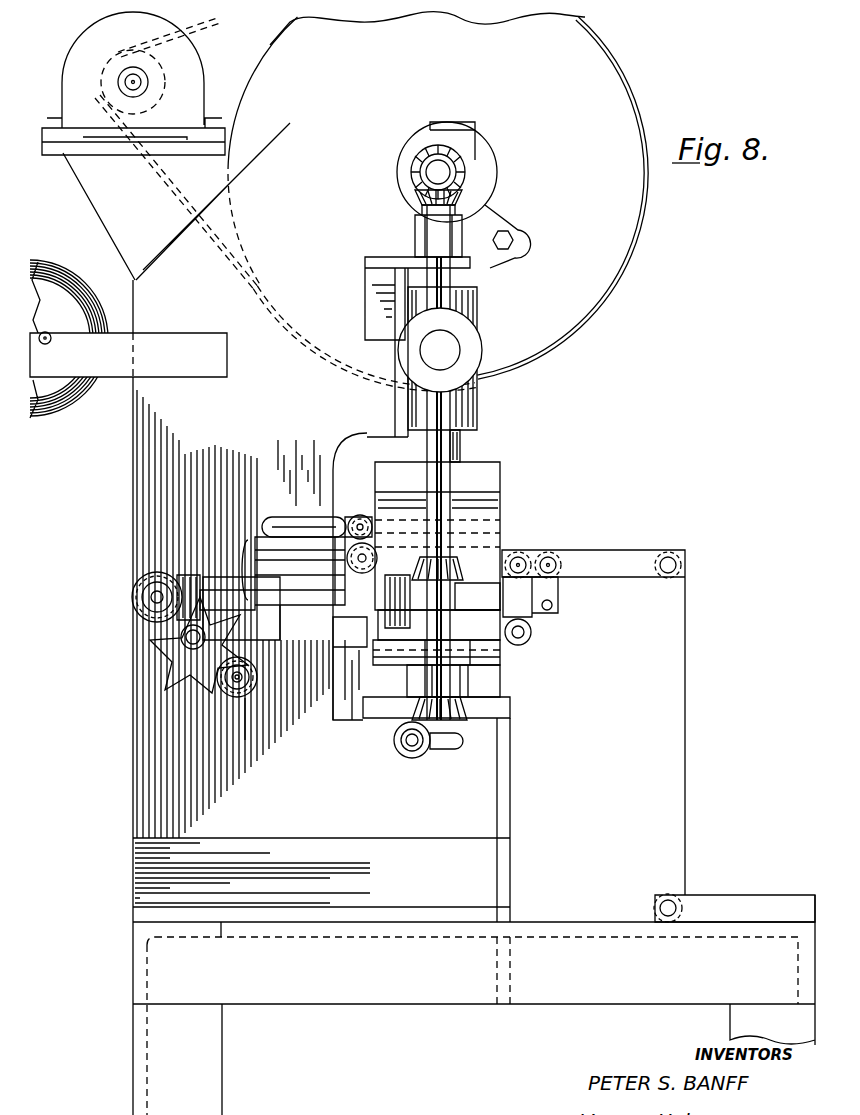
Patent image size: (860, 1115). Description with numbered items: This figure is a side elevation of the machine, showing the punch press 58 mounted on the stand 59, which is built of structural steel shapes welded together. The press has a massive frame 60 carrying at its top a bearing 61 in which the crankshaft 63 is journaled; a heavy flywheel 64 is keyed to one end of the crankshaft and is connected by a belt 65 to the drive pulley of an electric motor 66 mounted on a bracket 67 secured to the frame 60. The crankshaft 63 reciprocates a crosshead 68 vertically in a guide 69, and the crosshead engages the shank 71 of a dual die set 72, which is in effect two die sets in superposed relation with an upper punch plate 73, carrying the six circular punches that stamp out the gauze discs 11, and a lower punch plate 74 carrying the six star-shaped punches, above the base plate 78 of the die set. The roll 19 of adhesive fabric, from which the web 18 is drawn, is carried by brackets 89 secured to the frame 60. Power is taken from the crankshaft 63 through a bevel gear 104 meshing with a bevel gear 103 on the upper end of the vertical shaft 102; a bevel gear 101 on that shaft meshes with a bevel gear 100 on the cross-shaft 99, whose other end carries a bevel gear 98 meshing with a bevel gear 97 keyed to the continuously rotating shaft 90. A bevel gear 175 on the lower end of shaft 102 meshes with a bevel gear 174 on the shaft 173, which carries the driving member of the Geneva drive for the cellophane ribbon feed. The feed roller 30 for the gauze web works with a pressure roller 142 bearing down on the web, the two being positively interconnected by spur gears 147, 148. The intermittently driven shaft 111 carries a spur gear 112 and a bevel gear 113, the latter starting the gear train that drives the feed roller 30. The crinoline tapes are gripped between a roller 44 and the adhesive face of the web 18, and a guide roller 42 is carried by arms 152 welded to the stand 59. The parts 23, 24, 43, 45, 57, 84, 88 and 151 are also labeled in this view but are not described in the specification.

The gauze discs 11 is at (227, 503).
The web 18 is at (30, 425).
The roll of adhesive fabric 19 is at (75, 280).
The roller 23 is at (515, 550).
The roller 24 is at (533, 638).
The feed roller 30 is at (265, 527).
The guide roller 42 is at (663, 895).
The roller 43 is at (665, 580).
The roller 44 is at (562, 553).
The bracket 45 is at (352, 650).
The plate 57 is at (490, 655).
The punch press 58 is at (525, 405).
The stand 59 is at (598, 1004).
The frame 60 is at (285, 386).
The bearing 61 is at (460, 128).
The crankshaft 63 is at (448, 170).
The flywheel 64 is at (640, 245).
The belt 65 is at (219, 8).
The electric motor 66 is at (98, 30).
The bracket 67 is at (110, 212).
The crosshead 68 is at (480, 432).
The guide 69 is at (395, 412).
The shank 71 is at (462, 452).
The dual die set 72 is at (512, 494).
The upper punch plate 73 is at (492, 472).
The lower punch plate 74 is at (477, 596).
The base plate 78 is at (505, 682).
The plate 84 is at (439, 625).
The support bar 88 is at (510, 716).
The brackets 89 is at (120, 378).
The shaft 90 is at (135, 600).
The bevel gear 97 is at (152, 620).
The bevel gear 98 is at (190, 575).
The cross-shaft 99 is at (325, 640).
The bevel gear 100 is at (412, 626).
The bevel gear 101 is at (462, 572).
The vertical shaft 102 is at (436, 503).
The bevel gear 103 is at (462, 196).
The bevel gear 104 is at (415, 158).
The shaft 111 is at (245, 740).
The spur gear 112 is at (225, 672).
The bevel gear 113 is at (222, 690).
The pressure roller 142 is at (288, 517).
The spur gear 147 is at (354, 515).
The spur gear 148 is at (372, 566).
The rail 151 is at (640, 550).
The arms 152 is at (722, 898).
The shaft 173 is at (464, 742).
The bevel gear 174 is at (422, 757).
The bevel gear 175 is at (468, 708).